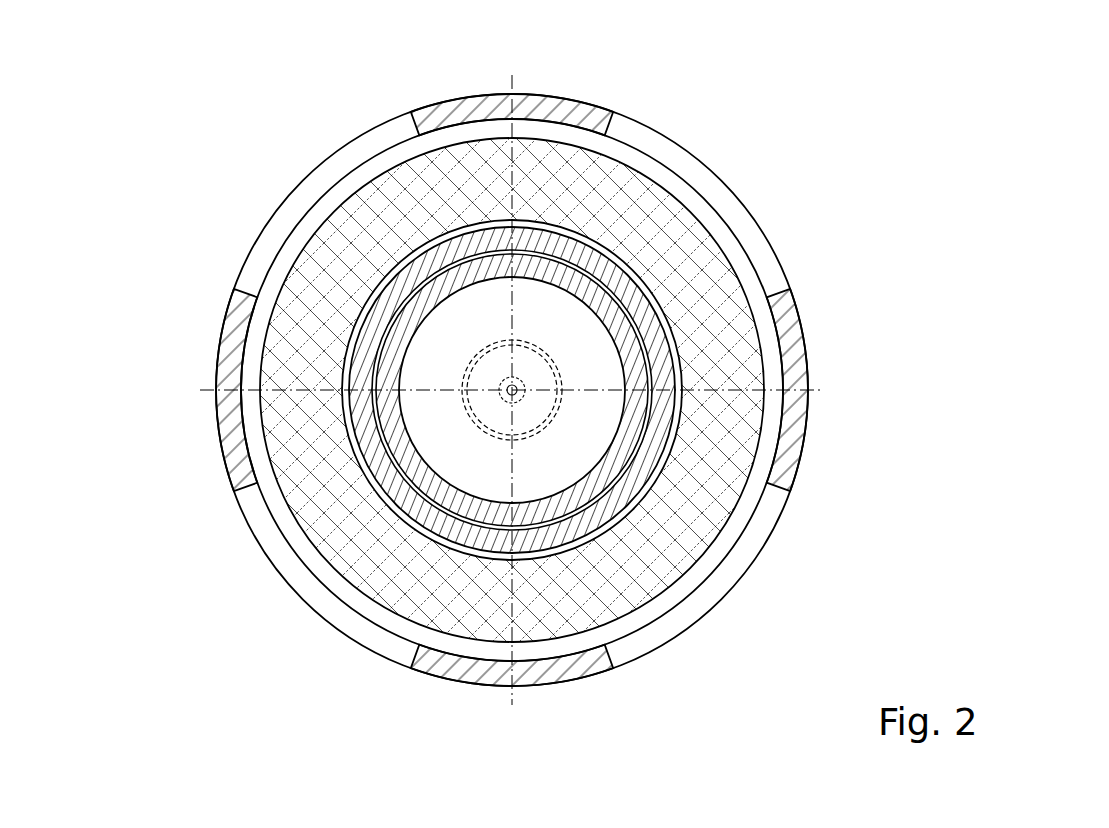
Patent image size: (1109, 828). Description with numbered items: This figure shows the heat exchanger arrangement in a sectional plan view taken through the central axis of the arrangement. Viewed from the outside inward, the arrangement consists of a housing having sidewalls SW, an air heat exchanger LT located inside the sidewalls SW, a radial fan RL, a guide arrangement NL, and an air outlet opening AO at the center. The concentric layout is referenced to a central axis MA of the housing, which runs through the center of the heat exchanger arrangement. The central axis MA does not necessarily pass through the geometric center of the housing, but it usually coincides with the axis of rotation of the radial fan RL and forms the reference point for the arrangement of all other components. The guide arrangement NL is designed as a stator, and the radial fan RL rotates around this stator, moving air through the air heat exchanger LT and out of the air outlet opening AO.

The sidewalls SW is at (222, 419).
The air heat exchanger LT is at (608, 212).
The guide arrangement NL is at (438, 262).
The radial fan RL is at (393, 300).
The air outlet opening AO is at (588, 348).
The central axis MA is at (512, 392).